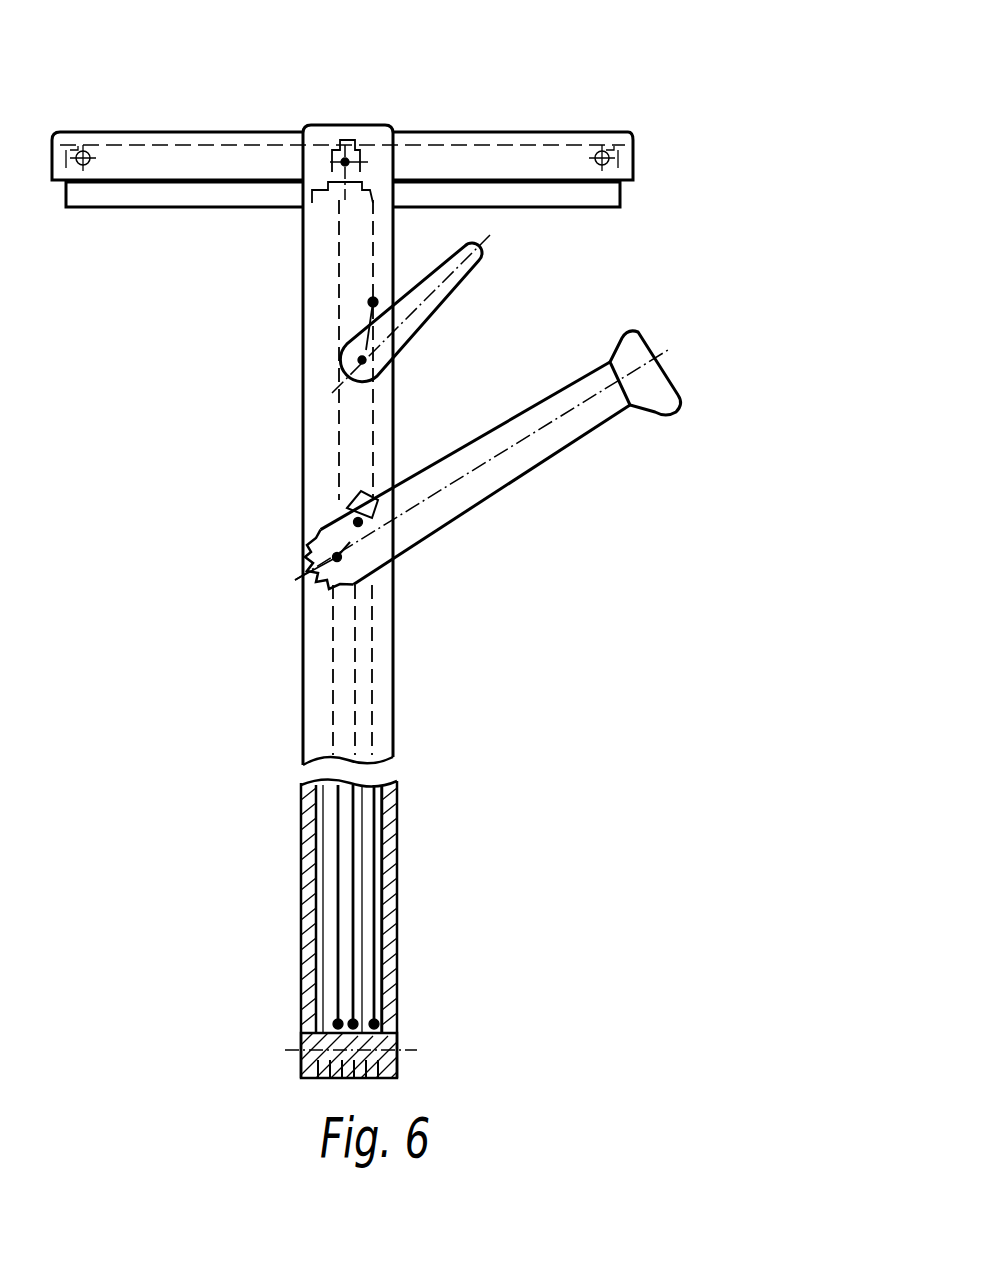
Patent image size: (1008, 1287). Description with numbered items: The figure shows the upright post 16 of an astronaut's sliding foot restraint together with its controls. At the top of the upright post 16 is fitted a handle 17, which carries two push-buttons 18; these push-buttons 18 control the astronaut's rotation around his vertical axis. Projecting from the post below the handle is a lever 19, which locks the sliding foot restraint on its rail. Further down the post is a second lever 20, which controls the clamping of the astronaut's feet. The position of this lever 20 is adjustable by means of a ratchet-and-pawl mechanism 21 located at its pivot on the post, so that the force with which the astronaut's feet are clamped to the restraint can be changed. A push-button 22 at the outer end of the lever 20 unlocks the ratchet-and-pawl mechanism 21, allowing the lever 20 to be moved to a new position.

The upright post 16 is at (320, 698).
The handle 17 is at (183, 162).
The push-buttons 18 is at (440, 190).
The lever 19 is at (447, 291).
The lever 20 is at (523, 455).
The ratchet-and-pawl mechanism 21 is at (317, 547).
The push-button 22 is at (650, 390).